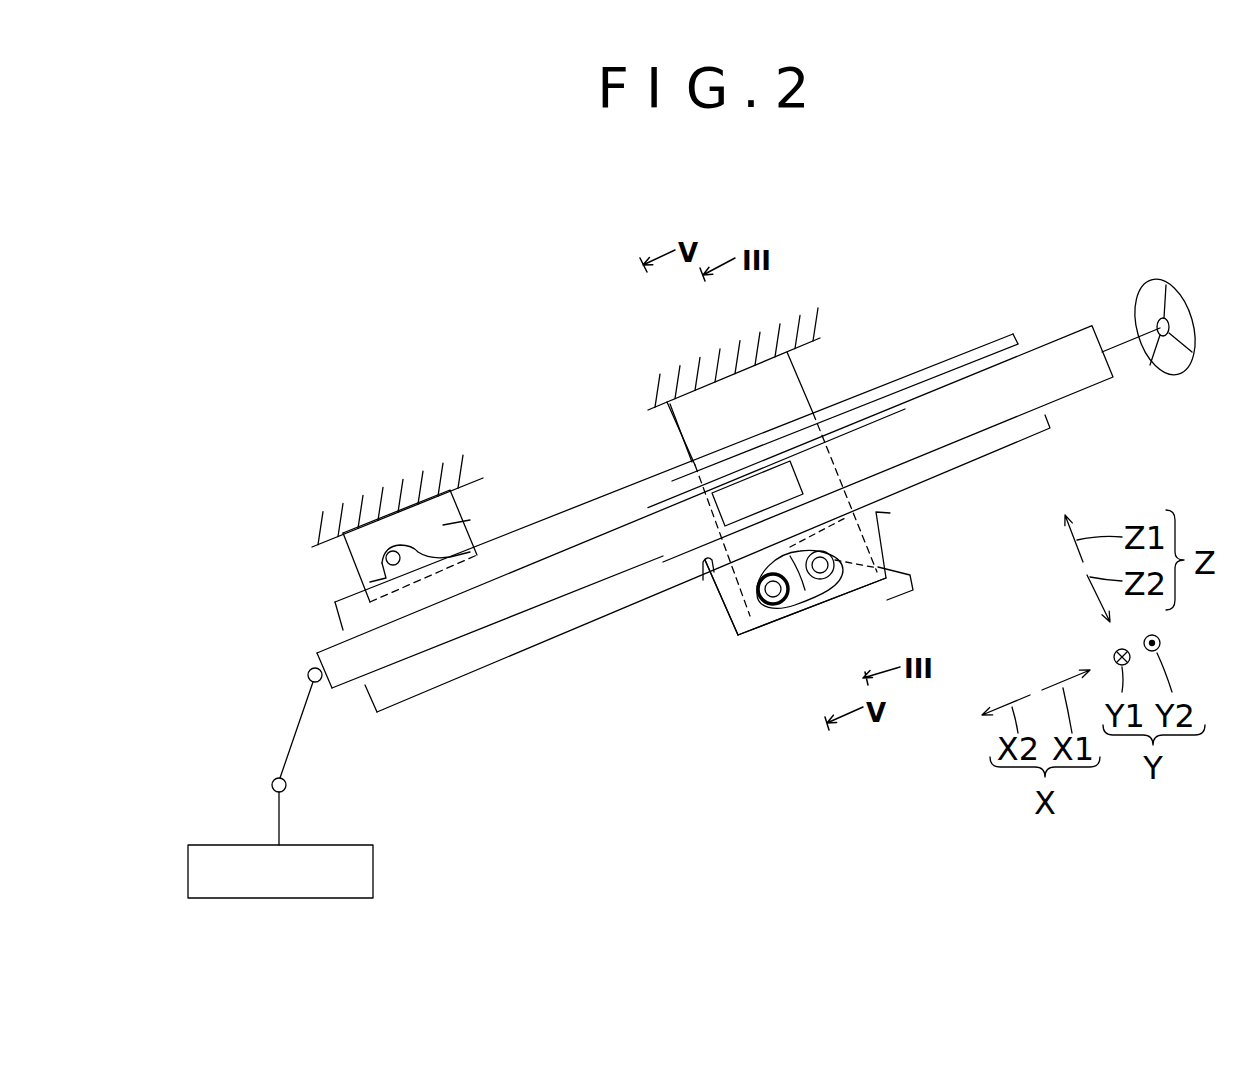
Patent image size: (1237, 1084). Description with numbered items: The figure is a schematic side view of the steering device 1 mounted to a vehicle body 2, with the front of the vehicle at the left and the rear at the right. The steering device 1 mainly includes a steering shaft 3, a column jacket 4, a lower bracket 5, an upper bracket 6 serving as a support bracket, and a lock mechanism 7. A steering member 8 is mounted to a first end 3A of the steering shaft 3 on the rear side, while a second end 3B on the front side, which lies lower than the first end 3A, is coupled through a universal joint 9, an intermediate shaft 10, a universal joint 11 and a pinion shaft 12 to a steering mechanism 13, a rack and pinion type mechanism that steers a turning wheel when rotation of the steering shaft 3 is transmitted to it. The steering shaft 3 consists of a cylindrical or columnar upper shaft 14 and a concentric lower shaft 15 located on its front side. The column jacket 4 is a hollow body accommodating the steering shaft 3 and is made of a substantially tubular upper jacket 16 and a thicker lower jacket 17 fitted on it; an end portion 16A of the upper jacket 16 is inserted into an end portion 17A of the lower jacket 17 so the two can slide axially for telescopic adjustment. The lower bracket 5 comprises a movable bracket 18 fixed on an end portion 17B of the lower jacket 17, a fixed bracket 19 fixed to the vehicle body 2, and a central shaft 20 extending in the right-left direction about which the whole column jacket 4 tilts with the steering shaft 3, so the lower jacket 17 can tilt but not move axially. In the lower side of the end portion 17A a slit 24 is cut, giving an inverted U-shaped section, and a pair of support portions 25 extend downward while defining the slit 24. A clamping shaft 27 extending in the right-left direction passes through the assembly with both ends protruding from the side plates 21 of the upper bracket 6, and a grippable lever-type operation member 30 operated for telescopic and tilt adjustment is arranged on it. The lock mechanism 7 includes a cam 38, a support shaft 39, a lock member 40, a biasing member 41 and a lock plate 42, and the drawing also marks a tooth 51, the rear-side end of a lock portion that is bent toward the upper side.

The steering device 1 is at (733, 938).
The vehicle body 2 is at (437, 475).
The steering shaft 3 is at (719, 500).
The first end 3A is at (1151, 362).
The second end 3B is at (320, 648).
The column jacket 4 is at (692, 551).
The lower bracket 5 is at (460, 503).
The upper bracket 6 is at (800, 372).
The lock mechanism 7 is at (781, 574).
The steering member 8 is at (1151, 283).
The universal joint 9 is at (308, 674).
The intermediate shaft 10 is at (297, 730).
The universal joint 11 is at (272, 784).
The pinion shaft 12 is at (281, 817).
The steering mechanism 13 is at (374, 870).
The upper shaft 14 is at (1090, 388).
The lower shaft 15 is at (450, 643).
The upper jacket 16 is at (713, 563).
The end portion 16A is at (702, 580).
The lower jacket 17 is at (676, 551).
The end portion 17A is at (828, 398).
The end portion 17B is at (368, 688).
The movable bracket 18 is at (388, 579).
The fixed bracket 19 is at (443, 525).
The central shaft 20 is at (384, 559).
The side plate 21 is at (693, 428).
The slit 24 is at (735, 640).
The support portion 25 is at (718, 618).
The clamping shaft 27 is at (822, 598).
The operation member 30 is at (896, 596).
The cam 38 is at (826, 582).
The support shaft 39 is at (773, 601).
The lock member 40 is at (792, 602).
The biasing member 41 is at (761, 603).
The lock plate 42 is at (838, 498).
The tooth 51 is at (793, 543).